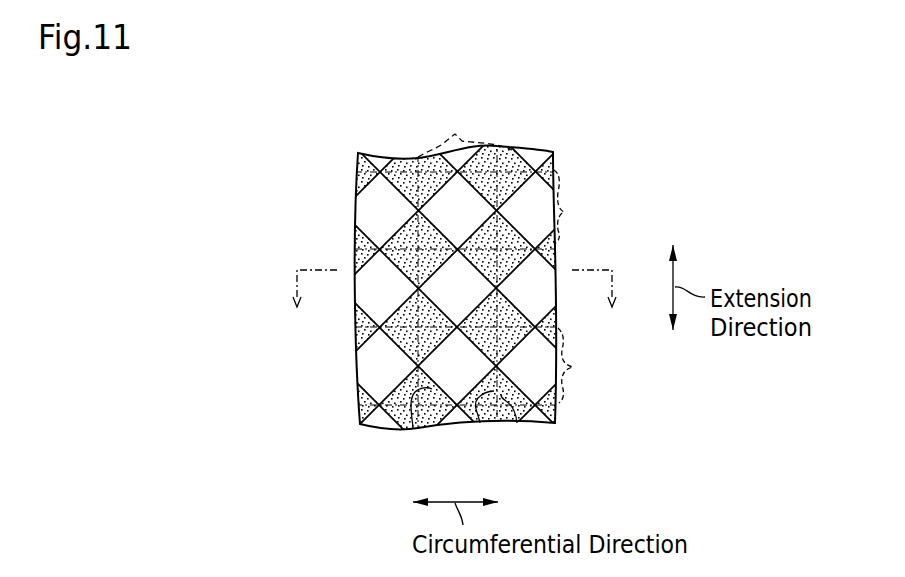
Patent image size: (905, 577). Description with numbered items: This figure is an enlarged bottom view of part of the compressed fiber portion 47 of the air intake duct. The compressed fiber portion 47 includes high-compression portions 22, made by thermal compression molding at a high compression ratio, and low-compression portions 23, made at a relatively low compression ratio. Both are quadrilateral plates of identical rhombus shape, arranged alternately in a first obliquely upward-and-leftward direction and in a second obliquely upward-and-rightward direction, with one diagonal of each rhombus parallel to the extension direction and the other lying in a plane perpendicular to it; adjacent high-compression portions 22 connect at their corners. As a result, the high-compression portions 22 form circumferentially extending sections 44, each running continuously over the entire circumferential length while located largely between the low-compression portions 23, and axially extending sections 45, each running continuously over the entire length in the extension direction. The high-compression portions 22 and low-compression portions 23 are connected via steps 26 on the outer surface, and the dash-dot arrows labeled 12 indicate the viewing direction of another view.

The viewing direction of FIG. 12 is at (456, 305).
The high-compression portion 22 is at (392, 192).
The low-compression portion 23 is at (368, 205).
The step 26 is at (413, 428).
The circumferentially extending section 44 is at (579, 286).
The axially extending section 45 is at (465, 132).
The compressed fiber portion 47 is at (568, 125).